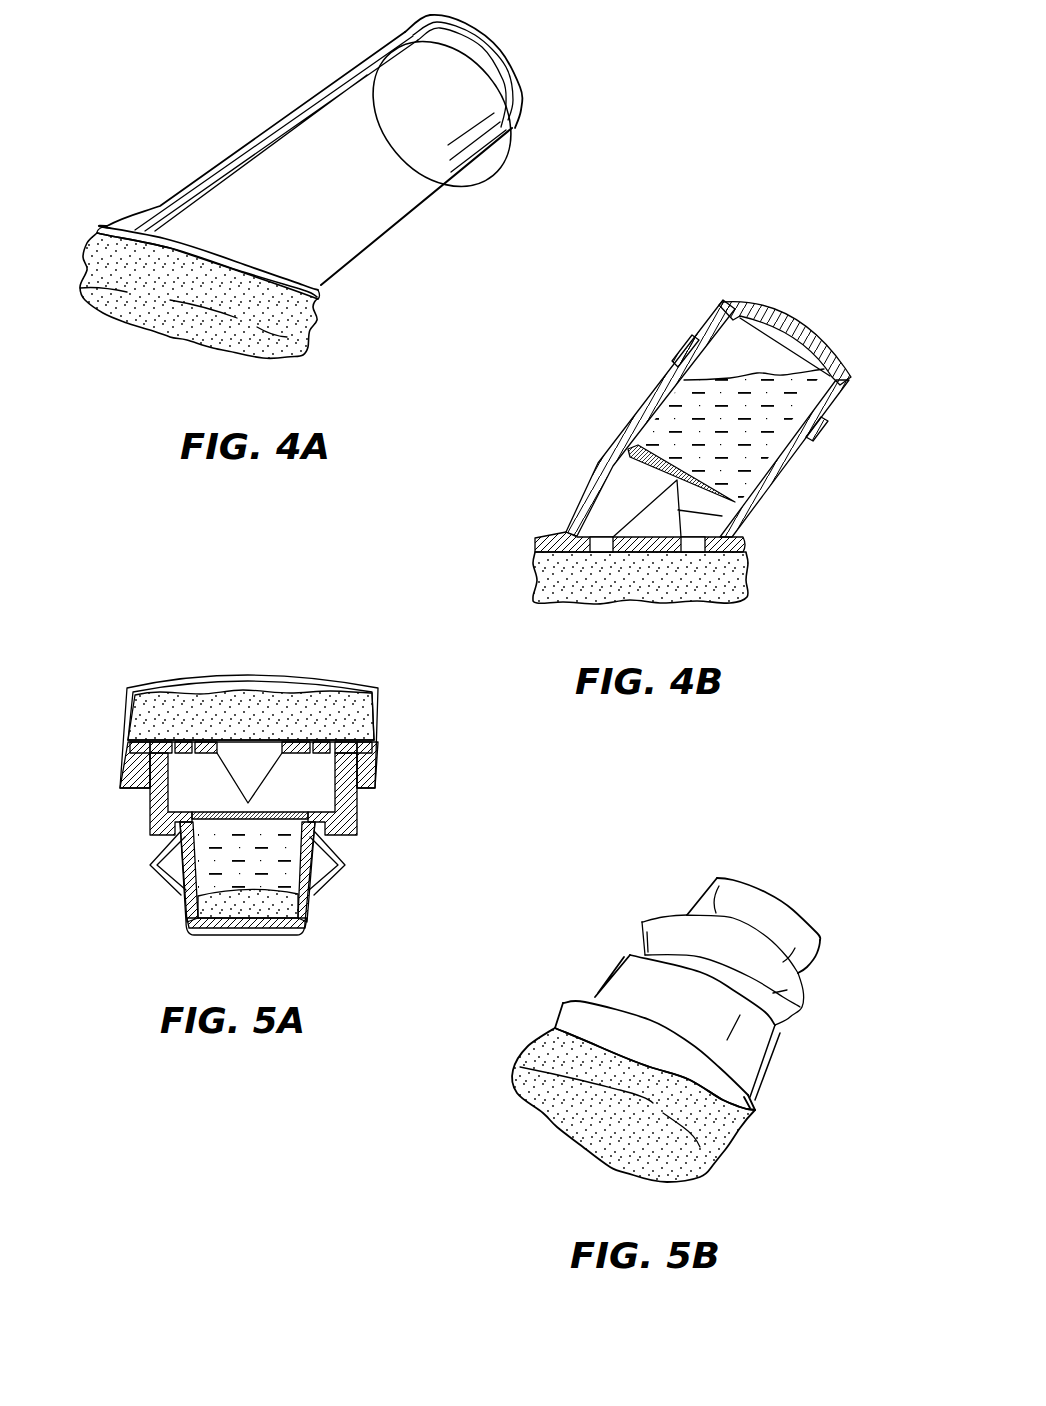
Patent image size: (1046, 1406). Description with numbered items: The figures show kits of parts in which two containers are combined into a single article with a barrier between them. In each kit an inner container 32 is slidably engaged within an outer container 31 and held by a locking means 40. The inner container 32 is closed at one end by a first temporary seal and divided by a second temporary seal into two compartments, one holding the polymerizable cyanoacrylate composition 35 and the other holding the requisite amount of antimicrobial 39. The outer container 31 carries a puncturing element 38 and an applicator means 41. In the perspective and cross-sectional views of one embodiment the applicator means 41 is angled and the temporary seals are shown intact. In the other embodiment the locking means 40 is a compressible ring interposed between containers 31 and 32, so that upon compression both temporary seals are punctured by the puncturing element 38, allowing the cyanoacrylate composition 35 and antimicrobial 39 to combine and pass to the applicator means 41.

In FIG. 4A, the container 31 is at (396, 233).
In FIG. 4B, the container 31 is at (600, 463).
In FIG. 5A, the container 31 is at (369, 751).
In FIG. 4A, the container 32 is at (526, 110).
In FIG. 4B, the container 32 is at (853, 362).
In FIG. 5A, the container 32 is at (319, 918).
In FIG. 5A, the polymerizable cyanoacrylate composition 35 is at (193, 911).
In FIG. 4B, the puncturing element 38 is at (748, 521).
In FIG. 5A, the puncturing element 38 is at (243, 777).
In FIG. 5A, the antimicrobial 39 is at (283, 810).
In FIG. 5A, the locking means 40 is at (354, 865).
In FIG. 4A, the applicator means 41 is at (323, 320).
In FIG. 4B, the applicator means 41 is at (754, 582).
In FIG. 5A, the applicator means 41 is at (138, 703).